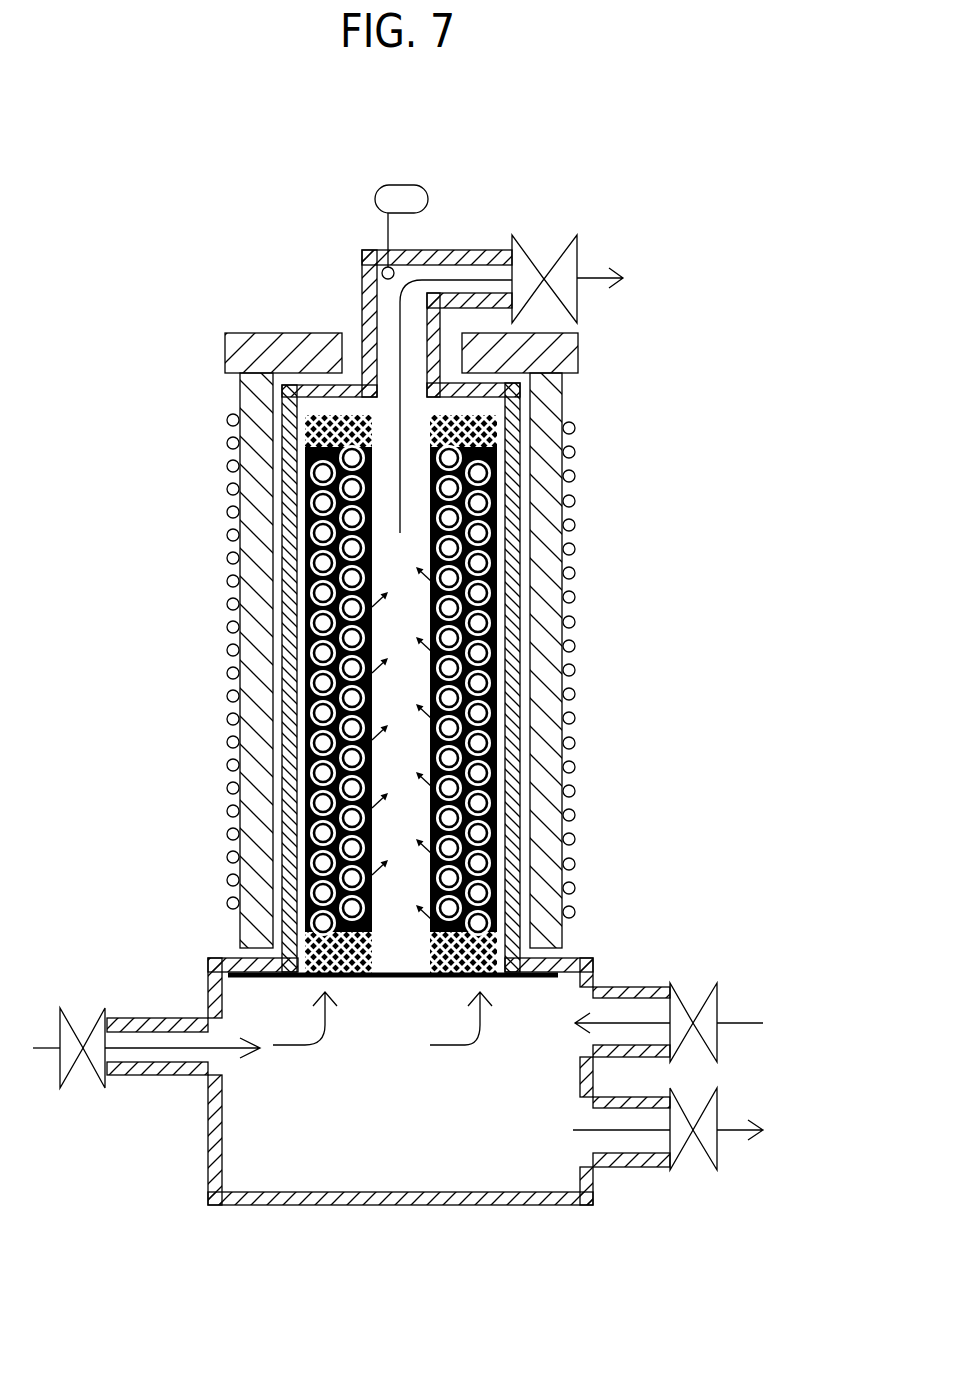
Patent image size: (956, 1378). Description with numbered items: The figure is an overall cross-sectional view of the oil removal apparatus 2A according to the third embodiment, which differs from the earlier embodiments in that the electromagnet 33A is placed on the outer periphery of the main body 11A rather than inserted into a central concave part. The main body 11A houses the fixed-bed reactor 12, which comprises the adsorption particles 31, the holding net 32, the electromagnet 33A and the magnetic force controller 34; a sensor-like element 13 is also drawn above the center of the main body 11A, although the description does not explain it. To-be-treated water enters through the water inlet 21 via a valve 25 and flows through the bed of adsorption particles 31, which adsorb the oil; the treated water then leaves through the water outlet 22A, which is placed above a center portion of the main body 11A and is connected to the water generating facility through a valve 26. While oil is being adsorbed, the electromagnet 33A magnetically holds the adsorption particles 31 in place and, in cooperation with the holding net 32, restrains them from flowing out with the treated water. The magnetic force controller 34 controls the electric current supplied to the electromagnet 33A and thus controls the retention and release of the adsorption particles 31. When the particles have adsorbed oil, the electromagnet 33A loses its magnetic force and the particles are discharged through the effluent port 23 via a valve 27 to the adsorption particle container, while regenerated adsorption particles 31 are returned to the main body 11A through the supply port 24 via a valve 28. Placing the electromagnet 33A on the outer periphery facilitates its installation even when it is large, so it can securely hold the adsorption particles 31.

The oil removal apparatus 2A is at (680, 261).
The main body 11A is at (566, 900).
The fixed-bed reactor 12 is at (347, 997).
The temperature sensor 13 is at (375, 202).
The water inlet 21 is at (163, 1075).
The water outlet 22A is at (475, 250).
The effluent port 23 is at (625, 1167).
The supply port 24 is at (637, 987).
The valve 25 is at (60, 1077).
The valve 26 is at (578, 248).
The valve 27 is at (718, 1155).
The valve 28 is at (718, 997).
The adsorption particles 31 is at (322, 503).
The holding net 32 is at (326, 415).
The electromagnet 33A is at (557, 562).
The magnetic force controller 34 is at (446, 340).